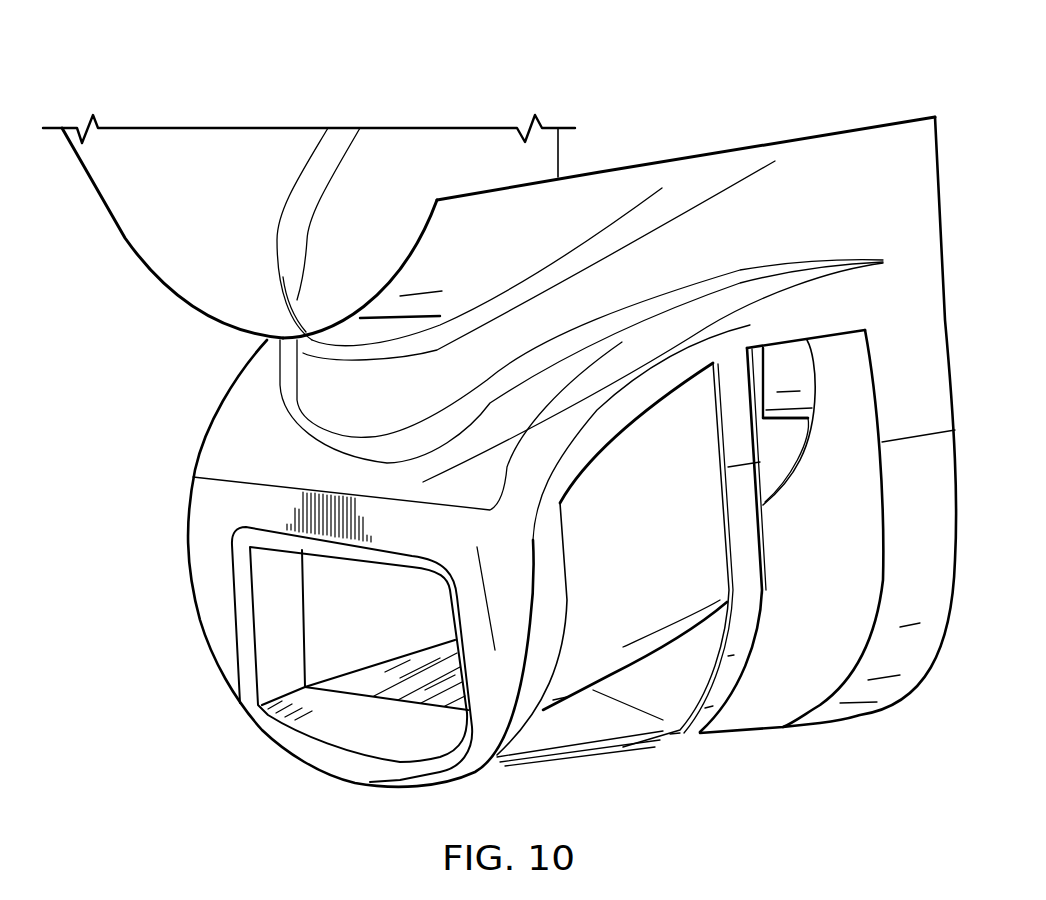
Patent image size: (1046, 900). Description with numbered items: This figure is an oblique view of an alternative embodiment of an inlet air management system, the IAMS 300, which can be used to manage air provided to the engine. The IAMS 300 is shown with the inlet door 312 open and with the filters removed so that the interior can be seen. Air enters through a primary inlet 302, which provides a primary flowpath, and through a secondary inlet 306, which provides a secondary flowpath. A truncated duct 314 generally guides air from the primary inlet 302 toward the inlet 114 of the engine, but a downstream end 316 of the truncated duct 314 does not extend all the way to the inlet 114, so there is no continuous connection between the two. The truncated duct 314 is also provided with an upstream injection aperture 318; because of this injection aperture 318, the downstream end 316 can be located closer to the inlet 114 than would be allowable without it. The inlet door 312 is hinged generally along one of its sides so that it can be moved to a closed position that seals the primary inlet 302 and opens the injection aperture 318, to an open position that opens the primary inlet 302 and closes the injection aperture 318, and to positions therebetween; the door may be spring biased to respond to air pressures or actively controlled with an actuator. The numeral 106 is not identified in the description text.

The chute 106 is at (210, 82).
The IAMS 300 is at (158, 604).
The primary inlet 302 is at (258, 633).
The inlet door 312 is at (390, 668).
The truncated duct 314 is at (700, 553).
The downstream end 316 is at (760, 370).
The inlet 114 is at (783, 417).
The secondary inlet 306 is at (778, 697).
The injection aperture 318 is at (573, 703).